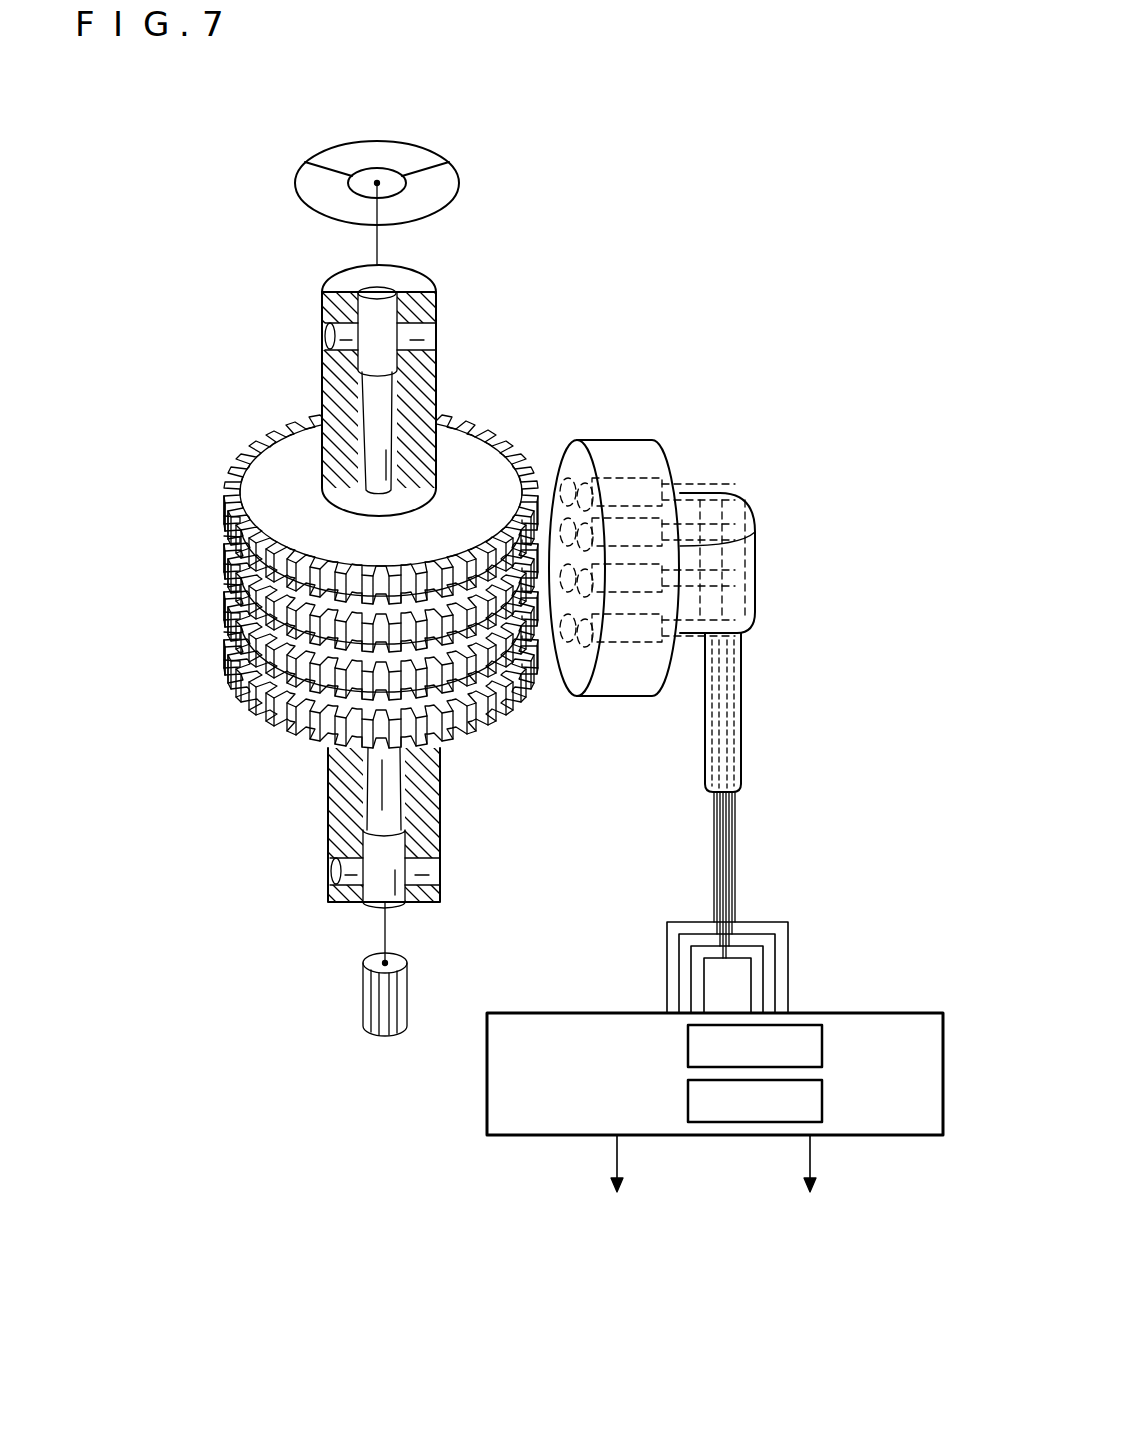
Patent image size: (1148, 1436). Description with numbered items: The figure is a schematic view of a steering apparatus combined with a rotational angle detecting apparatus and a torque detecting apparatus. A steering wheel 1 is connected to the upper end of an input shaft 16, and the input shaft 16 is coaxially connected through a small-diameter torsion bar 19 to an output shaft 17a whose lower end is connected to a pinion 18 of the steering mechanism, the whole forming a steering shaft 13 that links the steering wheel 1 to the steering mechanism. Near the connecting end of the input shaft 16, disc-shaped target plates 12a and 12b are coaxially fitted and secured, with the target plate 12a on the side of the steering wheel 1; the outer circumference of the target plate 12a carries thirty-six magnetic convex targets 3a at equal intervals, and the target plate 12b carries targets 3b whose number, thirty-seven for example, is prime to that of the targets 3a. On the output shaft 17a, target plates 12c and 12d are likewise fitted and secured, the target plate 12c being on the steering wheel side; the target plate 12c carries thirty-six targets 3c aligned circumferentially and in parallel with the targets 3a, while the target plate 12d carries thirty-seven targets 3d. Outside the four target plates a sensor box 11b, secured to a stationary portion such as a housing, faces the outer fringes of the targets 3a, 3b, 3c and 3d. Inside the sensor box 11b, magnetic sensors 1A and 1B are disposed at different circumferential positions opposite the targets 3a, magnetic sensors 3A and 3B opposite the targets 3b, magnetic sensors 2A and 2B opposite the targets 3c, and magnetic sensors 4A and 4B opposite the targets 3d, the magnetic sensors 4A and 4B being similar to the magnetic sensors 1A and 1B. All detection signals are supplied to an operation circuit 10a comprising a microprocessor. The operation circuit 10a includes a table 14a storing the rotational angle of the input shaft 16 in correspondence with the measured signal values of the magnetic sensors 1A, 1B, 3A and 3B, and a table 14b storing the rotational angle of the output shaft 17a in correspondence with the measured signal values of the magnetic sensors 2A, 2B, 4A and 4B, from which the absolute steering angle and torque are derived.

The steering wheel 1 is at (458, 182).
The steering shaft 13 is at (378, 375).
The input shaft 16 is at (426, 372).
The torsion bar 19 is at (372, 410).
The target plate 12a is at (250, 443).
The target plate 12b is at (228, 530).
The target plate 12c is at (228, 620).
The target plate 12d is at (257, 692).
The targets 3a is at (228, 481).
The targets 3b is at (230, 580).
The targets 3c is at (228, 665).
The targets 3d is at (290, 725).
The magnetic sensor 1A is at (605, 440).
The magnetic sensor 1B is at (560, 445).
The magnetic sensor 2A is at (723, 597).
The magnetic sensor 2B is at (730, 567).
The magnetic sensor 3A is at (730, 550).
The magnetic sensor 3B is at (757, 525).
The magnetic sensor 4A is at (620, 697).
The magnetic sensor 4B is at (555, 697).
The sensor box 11b is at (651, 554).
The output shaft 17a is at (440, 818).
The pinion 18 is at (410, 995).
The operation circuit 10a is at (669, 1151).
The table 14a is at (822, 1046).
The table 14b is at (822, 1098).